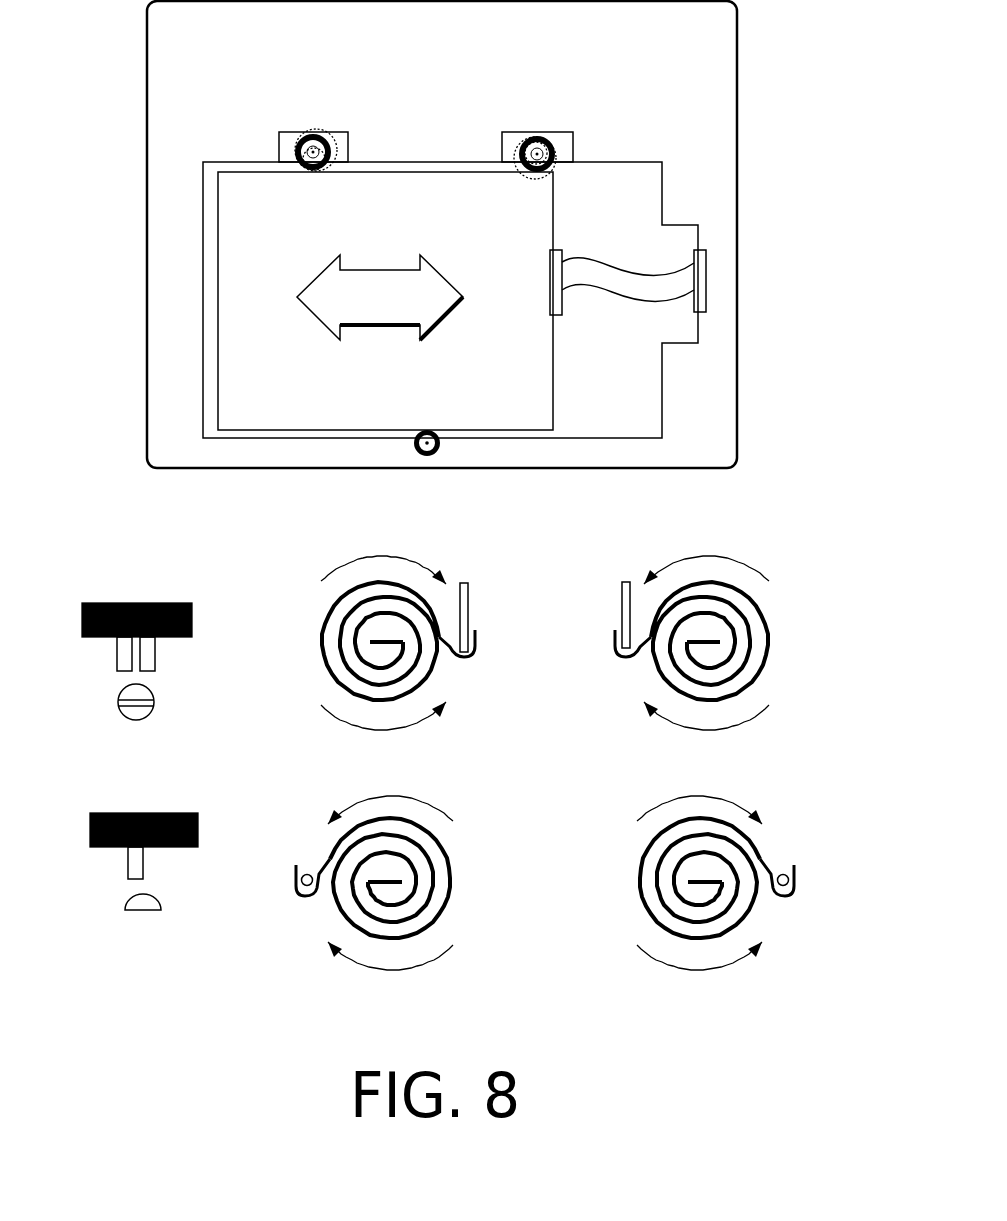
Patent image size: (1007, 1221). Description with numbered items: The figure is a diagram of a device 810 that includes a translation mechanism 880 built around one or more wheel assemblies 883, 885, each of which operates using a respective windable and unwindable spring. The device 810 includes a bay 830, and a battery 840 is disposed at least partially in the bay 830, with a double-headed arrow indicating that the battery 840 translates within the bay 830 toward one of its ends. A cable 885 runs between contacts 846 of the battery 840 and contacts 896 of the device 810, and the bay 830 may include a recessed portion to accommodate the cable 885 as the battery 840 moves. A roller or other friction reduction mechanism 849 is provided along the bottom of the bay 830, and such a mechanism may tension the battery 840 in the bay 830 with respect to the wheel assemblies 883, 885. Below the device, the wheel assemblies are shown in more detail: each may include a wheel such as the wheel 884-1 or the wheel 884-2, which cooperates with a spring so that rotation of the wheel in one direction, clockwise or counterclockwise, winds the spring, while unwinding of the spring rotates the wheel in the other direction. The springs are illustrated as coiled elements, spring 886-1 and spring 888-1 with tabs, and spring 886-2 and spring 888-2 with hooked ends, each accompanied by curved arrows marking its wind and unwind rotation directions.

The device 810 is at (737, 112).
The translation mechanism 880 is at (515, 63).
The bay 830 is at (619, 216).
The battery 840 is at (399, 237).
The wheel assembly 883 is at (320, 128).
The wheel assembly / cable 885 is at (548, 134).
The contacts of the battery 846 is at (557, 273).
The contacts of the device 896 is at (703, 247).
The roller or other friction reduction mechanism 849 is at (420, 430).
The wheel 884-1 is at (139, 603).
The wheel 884-2 is at (147, 813).
The windable and unwindable spring 886-1 is at (360, 534).
The windable and unwindable spring 888-1 is at (677, 534).
The windable and unwindable spring 886-2 is at (361, 1009).
The windable and unwindable spring 888-2 is at (677, 1009).